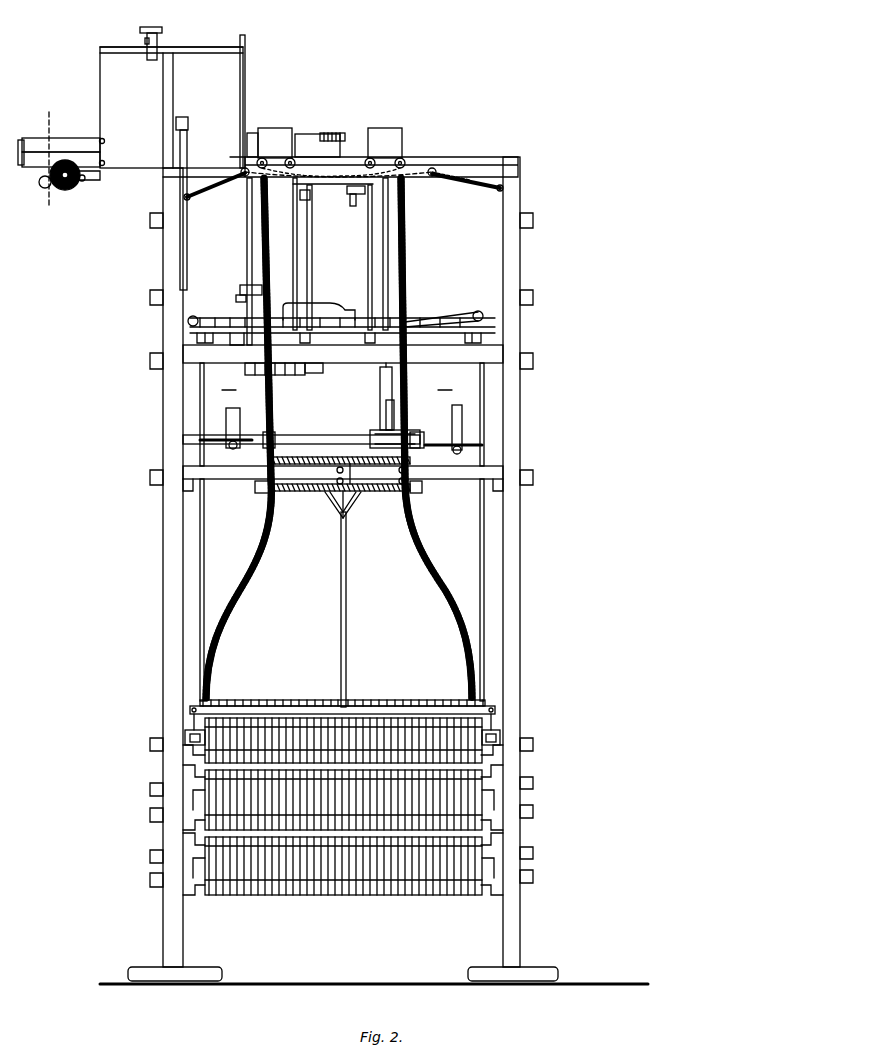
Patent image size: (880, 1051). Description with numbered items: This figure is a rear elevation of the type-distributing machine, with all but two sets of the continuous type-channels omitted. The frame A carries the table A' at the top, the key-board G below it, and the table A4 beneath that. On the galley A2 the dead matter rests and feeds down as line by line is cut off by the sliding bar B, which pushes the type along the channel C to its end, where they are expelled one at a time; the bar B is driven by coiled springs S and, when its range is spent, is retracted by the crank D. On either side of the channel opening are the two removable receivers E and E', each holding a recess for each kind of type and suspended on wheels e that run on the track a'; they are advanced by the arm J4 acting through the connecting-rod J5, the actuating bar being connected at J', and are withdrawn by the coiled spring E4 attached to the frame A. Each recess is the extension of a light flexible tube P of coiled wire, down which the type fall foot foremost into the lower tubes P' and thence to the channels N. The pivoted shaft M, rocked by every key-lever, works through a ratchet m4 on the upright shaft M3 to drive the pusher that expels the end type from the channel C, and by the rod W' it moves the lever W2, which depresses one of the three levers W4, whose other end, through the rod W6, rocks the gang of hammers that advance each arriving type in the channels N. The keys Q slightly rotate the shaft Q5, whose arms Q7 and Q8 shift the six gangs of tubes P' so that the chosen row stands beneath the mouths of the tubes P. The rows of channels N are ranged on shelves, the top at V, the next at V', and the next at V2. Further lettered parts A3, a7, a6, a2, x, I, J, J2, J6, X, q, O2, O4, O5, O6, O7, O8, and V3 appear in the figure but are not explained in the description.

The frame A is at (374, 570).
The table A' is at (357, 167).
The galley A2 is at (172, 162).
The tank top A3 is at (160, 42).
The table A4 is at (500, 470).
The valve handle a7 is at (152, 27).
The valve a6 is at (145, 40).
The link a2 is at (88, 181).
The track a' is at (445, 187).
The sliding bar B is at (72, 140).
The section line x is at (46, 156).
The coiled springs S is at (68, 190).
The crank D is at (42, 188).
The removable receiver E' is at (275, 143).
The channel C is at (320, 145).
The removable receiver E is at (385, 143).
The wheels e is at (368, 160).
The coiled spring E4 is at (222, 184).
The vertical shaft M3 is at (247, 240).
The ratchet m4 is at (240, 289).
The tubes P is at (342, 329).
The tubes P' is at (339, 590).
The rod I is at (336, 254).
The cam table J is at (341, 314).
The bar connection J' is at (285, 373).
The rod J2 is at (376, 257).
The arm J4 is at (313, 240).
The connecting-rod J5 is at (310, 196).
The bracket J6 is at (353, 199).
The pivoted shaft M is at (311, 375).
The key-board G is at (343, 354).
The mark X is at (337, 389).
The rod W' is at (352, 414).
The lever W2 is at (341, 429).
The levers W4 is at (343, 488).
The rod W6 is at (342, 590).
The keys Q is at (380, 400).
The slide part q is at (382, 407).
The shaft Q5 is at (312, 435).
The arm Q7 is at (263, 432).
The arm Q8 is at (260, 494).
The grate bar O2 is at (280, 702).
The grate O4 is at (262, 710).
The bar O5 is at (312, 460).
The bar O6 is at (352, 464).
The arm O7 is at (360, 494).
The bar O8 is at (330, 496).
The table V is at (337, 742).
The shelf V' is at (315, 797).
The shelf V2 is at (192, 862).
The rod V3 is at (347, 620).
The channels N is at (343, 806).